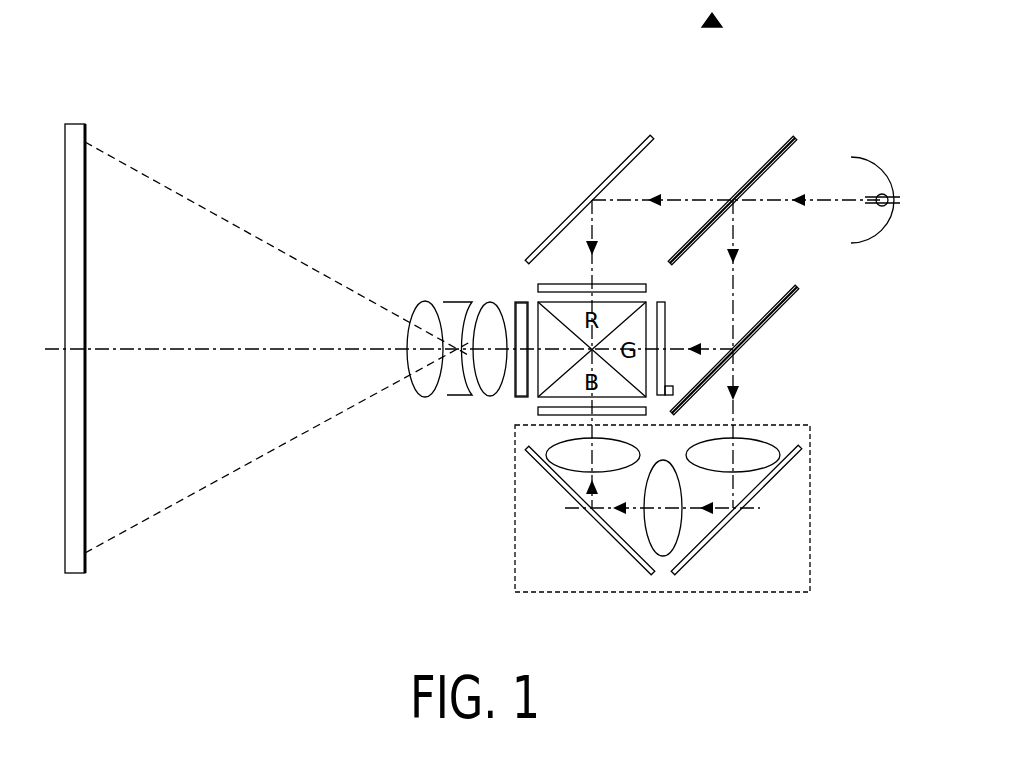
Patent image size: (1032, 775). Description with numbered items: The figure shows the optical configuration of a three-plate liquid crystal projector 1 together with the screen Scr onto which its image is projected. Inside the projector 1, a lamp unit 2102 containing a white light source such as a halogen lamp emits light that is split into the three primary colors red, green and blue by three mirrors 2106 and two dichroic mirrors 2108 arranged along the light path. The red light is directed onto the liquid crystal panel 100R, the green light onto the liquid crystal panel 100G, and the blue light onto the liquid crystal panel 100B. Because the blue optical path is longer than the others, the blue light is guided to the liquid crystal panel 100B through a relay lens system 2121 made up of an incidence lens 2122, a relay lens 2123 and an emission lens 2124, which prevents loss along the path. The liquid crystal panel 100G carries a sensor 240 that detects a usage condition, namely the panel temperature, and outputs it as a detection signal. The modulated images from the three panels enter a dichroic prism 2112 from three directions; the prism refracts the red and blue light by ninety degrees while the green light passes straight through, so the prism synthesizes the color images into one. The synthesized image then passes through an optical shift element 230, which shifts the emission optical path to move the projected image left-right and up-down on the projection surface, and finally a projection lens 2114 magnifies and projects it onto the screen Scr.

The liquid crystal projector 1 is at (722, 22).
The screen Scr is at (85, 563).
The lamp unit 2102 is at (878, 194).
The mirror 2106 is at (627, 164).
The dichroic mirror 2108 is at (765, 164).
The dichroic prism 2112 is at (526, 300).
The optical shift element 230 is at (521, 300).
The projection lens 2114 is at (504, 296).
The liquid crystal panel 100R is at (575, 284).
The liquid crystal panel 100G is at (666, 322).
The liquid crystal panel 100B is at (538, 410).
The sensor 240 is at (673, 389).
The relay lens system 2121 is at (812, 488).
The incidence lens 2122 is at (753, 465).
The relay lens 2123 is at (672, 535).
The emission lens 2124 is at (570, 462).